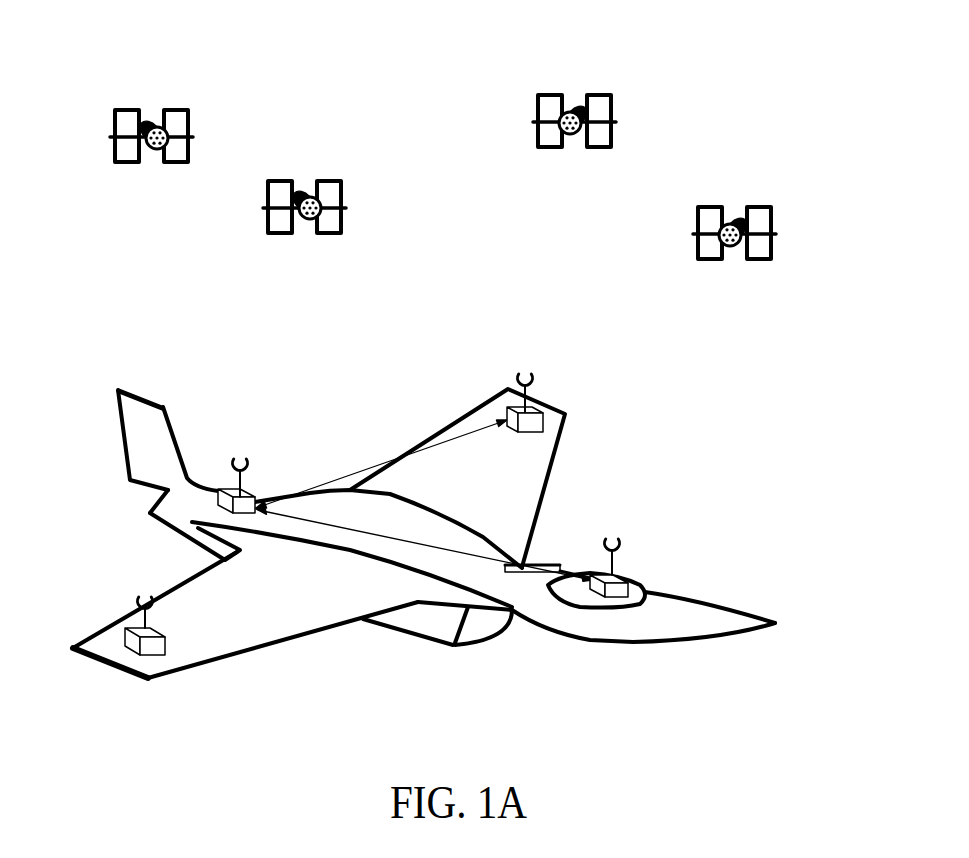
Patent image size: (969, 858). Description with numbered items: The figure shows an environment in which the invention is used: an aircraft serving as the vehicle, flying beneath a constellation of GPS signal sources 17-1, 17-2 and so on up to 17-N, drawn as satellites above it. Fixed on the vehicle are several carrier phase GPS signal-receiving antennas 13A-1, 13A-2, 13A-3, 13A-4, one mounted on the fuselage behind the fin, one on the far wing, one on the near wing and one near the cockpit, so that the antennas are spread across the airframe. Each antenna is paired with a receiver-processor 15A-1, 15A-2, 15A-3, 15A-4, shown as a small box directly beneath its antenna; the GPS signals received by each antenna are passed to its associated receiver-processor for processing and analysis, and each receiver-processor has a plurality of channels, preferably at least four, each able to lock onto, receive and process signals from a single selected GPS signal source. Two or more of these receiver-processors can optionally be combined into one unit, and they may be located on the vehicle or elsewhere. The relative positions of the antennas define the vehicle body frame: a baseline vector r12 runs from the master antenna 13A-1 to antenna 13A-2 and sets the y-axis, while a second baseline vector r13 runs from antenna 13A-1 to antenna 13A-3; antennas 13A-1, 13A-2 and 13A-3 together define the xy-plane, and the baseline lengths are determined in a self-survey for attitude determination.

The GPS signal source 17-1 is at (150, 123).
The GPS signal source 17-2 is at (305, 192).
The GPS signal source 17-N is at (738, 220).
The carrier phase GPS signal-receiving antenna 13A-1 is at (248, 465).
The carrier phase GPS signal-receiving antenna 13A-2 is at (618, 547).
The carrier phase GPS signal-receiving antenna 13A-3 is at (135, 607).
The carrier phase GPS signal-receiving antenna 13A-4 is at (533, 383).
The receiver-processor 15A-1 is at (243, 505).
The receiver-processor 15A-2 is at (618, 588).
The receiver-processor 15A-3 is at (133, 640).
The receiver-processor 15A-4 is at (532, 425).
The baseline vector r12 is at (367, 531).
The baseline vector r13 is at (427, 467).